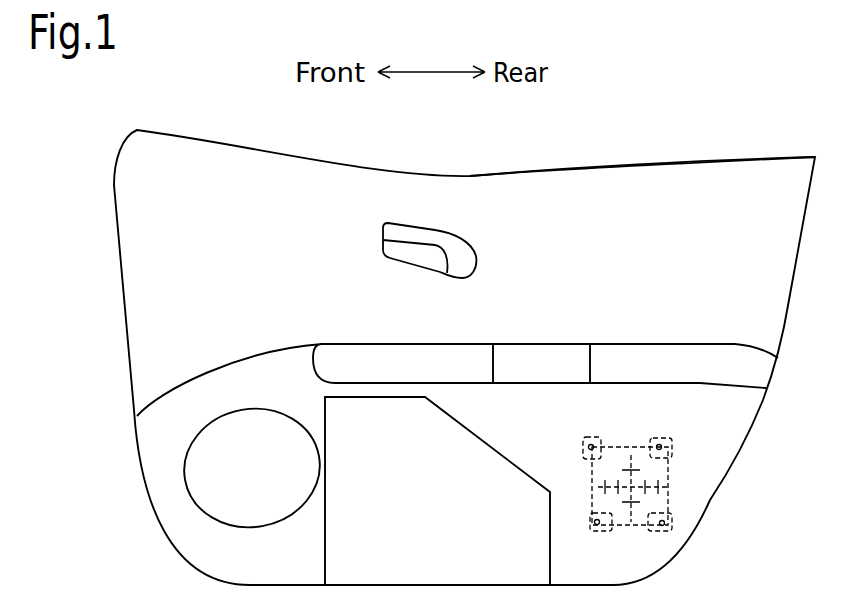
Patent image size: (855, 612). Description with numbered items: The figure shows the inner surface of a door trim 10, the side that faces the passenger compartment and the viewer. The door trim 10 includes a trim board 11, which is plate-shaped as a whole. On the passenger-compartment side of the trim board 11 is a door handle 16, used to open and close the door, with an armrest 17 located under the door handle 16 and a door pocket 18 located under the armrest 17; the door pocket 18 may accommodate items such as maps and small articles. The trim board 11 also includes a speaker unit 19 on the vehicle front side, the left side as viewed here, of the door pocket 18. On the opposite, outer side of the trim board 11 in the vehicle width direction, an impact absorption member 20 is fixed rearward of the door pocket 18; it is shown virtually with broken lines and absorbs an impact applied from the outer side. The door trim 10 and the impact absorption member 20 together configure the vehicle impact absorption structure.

The door trim 10 is at (259, 109).
The trim board 11 is at (558, 170).
The door handle 16 is at (432, 246).
The armrest 17 is at (493, 344).
The door pocket 18 is at (500, 450).
The speaker unit 19 is at (263, 418).
The impact absorption member 20 is at (690, 493).